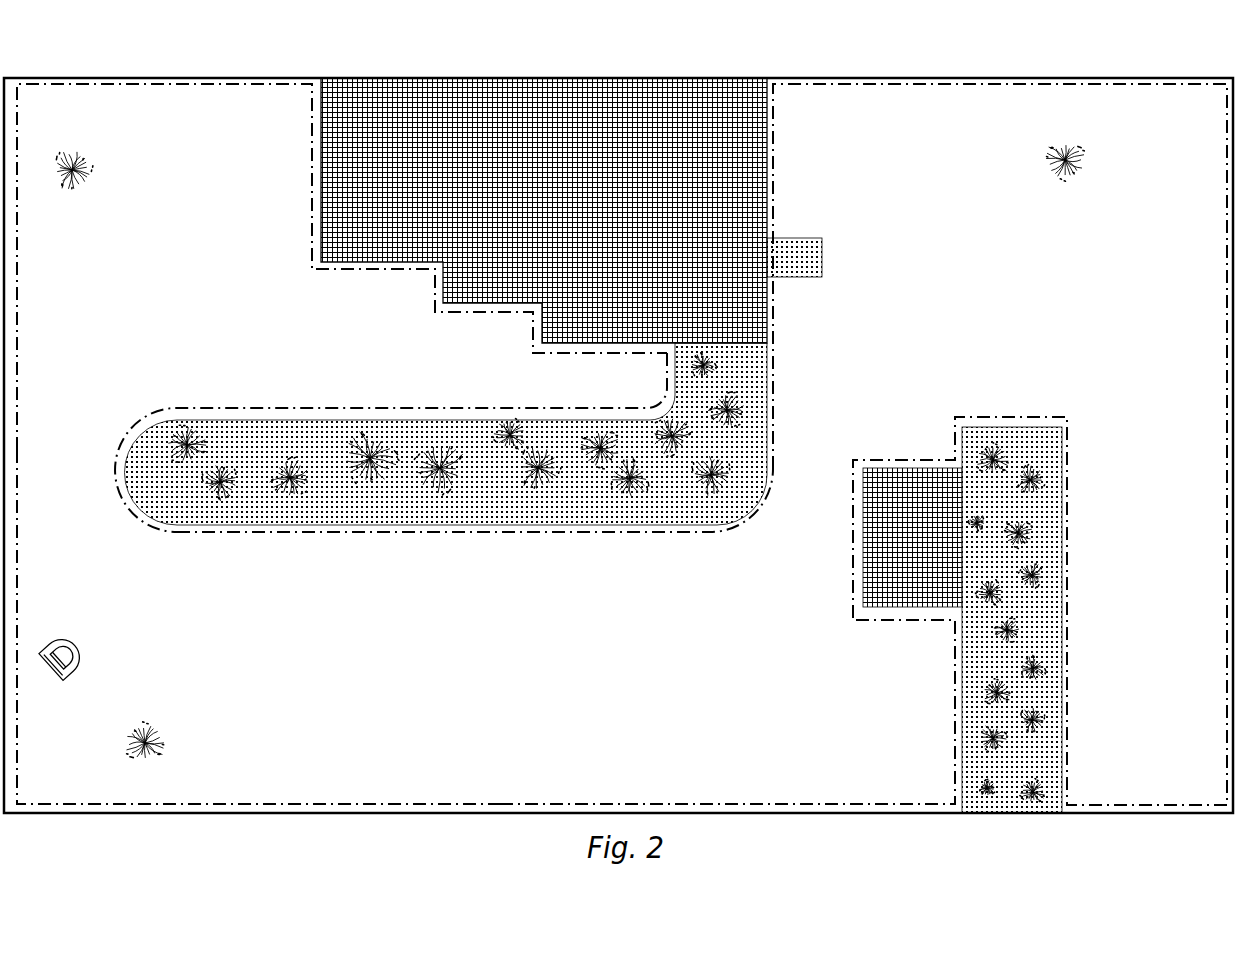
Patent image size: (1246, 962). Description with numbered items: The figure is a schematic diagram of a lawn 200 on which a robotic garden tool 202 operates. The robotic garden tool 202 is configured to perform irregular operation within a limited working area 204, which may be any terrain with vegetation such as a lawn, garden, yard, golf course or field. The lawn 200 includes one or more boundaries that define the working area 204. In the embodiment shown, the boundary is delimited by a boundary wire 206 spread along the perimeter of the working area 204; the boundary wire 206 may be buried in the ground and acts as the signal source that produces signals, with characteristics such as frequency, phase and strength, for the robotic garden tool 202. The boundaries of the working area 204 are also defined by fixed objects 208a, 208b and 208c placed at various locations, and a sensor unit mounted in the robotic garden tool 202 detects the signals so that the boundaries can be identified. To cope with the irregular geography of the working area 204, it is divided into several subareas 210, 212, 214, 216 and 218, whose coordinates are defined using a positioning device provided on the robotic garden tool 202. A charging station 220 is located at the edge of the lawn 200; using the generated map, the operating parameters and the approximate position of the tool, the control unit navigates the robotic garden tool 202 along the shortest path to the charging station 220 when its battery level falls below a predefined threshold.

The lawn 200 is at (1128, 62).
The robotic garden tool 202 is at (60, 630).
The working area 204 is at (566, 636).
The boundary wire 206 is at (773, 427).
The fixed object 208a is at (158, 717).
The fixed object 208b is at (92, 142).
The fixed object 208c is at (1057, 133).
The subarea 210 is at (1000, 332).
The subarea 212 is at (1040, 615).
The subarea 214 is at (258, 627).
The subarea 216 is at (342, 267).
The subarea 218 is at (391, 442).
The charging station 220 is at (793, 235).